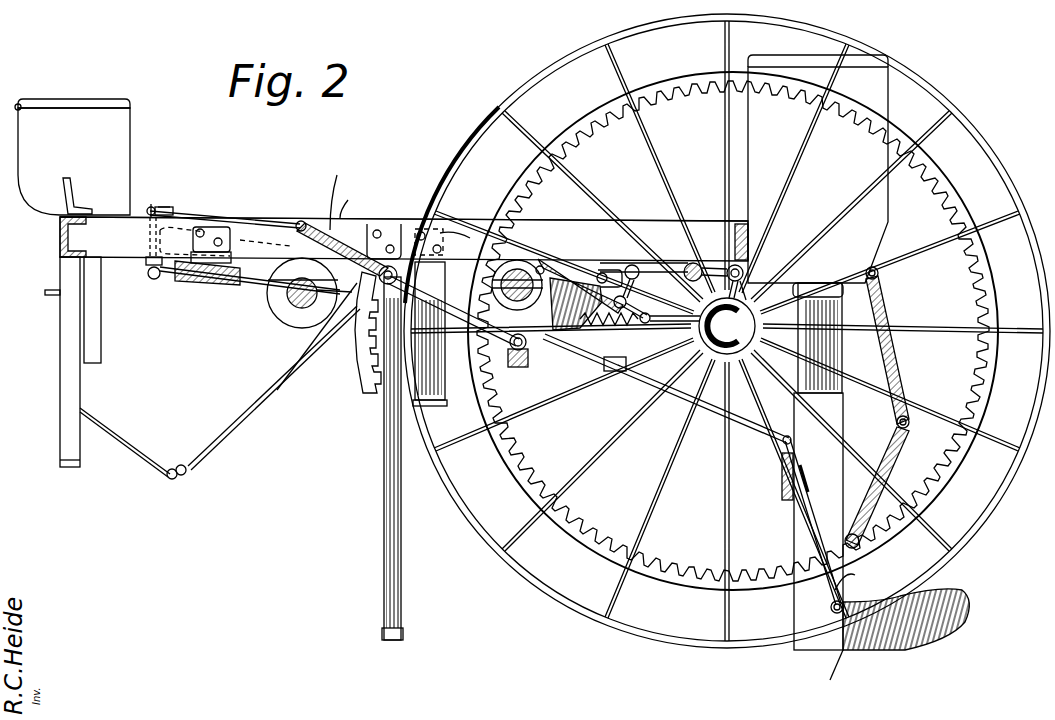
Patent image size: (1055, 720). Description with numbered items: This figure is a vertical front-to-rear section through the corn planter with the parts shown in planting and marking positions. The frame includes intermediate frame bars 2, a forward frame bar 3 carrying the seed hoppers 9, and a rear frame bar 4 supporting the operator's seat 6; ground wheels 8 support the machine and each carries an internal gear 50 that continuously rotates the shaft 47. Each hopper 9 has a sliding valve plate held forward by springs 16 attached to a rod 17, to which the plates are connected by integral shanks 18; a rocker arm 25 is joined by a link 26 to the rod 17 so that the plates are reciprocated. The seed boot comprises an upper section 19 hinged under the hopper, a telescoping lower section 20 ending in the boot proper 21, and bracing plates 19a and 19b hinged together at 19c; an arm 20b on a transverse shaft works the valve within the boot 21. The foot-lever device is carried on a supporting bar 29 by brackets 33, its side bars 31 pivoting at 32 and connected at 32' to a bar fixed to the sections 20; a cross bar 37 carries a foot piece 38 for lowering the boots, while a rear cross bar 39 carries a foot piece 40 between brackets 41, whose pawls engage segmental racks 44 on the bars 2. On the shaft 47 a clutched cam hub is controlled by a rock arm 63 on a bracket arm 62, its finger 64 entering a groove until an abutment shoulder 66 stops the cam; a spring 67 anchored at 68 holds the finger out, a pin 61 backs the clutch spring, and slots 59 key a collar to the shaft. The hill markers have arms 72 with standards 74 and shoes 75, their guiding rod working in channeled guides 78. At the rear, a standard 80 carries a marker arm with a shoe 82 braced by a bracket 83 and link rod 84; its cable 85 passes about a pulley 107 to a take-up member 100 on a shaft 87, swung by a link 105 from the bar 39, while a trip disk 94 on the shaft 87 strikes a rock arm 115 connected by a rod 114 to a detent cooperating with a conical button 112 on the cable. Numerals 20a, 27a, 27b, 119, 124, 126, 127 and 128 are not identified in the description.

The intermediate frame bars 2 is at (350, 228).
The forward frame bar 3 is at (750, 248).
The rear frame bar 4 is at (60, 238).
The operator's seat 6 is at (72, 182).
The ground wheels 8 is at (1042, 236).
The seed hoppers 9 is at (818, 169).
The springs 16 is at (697, 264).
The rod 17 is at (728, 268).
The integral shanks 18 is at (722, 292).
The seed boot section 19 is at (842, 348).
The brace plate 19a is at (906, 350).
The brace plate 19b is at (896, 454).
The hinge connection 19c is at (910, 424).
The seed boot section 20 is at (850, 420).
The lever pivot 20a is at (826, 500).
The arm 20b is at (853, 665).
The boot proper 21 is at (915, 615).
The rocker arm 25 is at (636, 263).
The link 26 is at (642, 287).
The pivot 27a is at (872, 576).
The pivot 27b is at (865, 274).
The supporting bar 29 is at (485, 385).
The side bars 31 is at (630, 376).
The pivots 32 is at (472, 329).
The pivotal connection 32' is at (812, 521).
The brackets 33 is at (510, 366).
The cross bar 37 is at (625, 355).
The foot piece 38 is at (588, 370).
The cross bar 39 is at (398, 278).
The foot piece 40 is at (447, 242).
The brackets 41 is at (390, 245).
The segmental racks 44 is at (365, 390).
The shaft 47 is at (540, 265).
The internal gear 50 is at (945, 478).
The slots 59 is at (610, 264).
The stop shoulder or pin 61 is at (575, 279).
The bracket arm 62 is at (628, 303).
The rock arm 63 is at (580, 262).
The finger 64 is at (520, 270).
The abutment shoulder 66 is at (506, 262).
The spring 67 is at (647, 323).
The spring connection 68 is at (605, 326).
The arms 72 is at (236, 286).
The standard 74 is at (384, 436).
The marker shoes 75 is at (401, 612).
The channeled guides 78 is at (436, 406).
The rigid standard 80 is at (82, 408).
The marker shoe 82 is at (50, 295).
The bracket 83 is at (270, 392).
The link rod 84 is at (128, 440).
The cables 85 is at (231, 240).
The shaft 87 is at (292, 325).
The trip disk 94 is at (335, 300).
The take up member 100 is at (347, 198).
The link 105 is at (360, 201).
The pulley 107 is at (175, 209).
The conical button 112 is at (168, 206).
The rod 114 is at (255, 223).
The rock arm 115 is at (301, 221).
The hopper 119 is at (130, 150).
The pin 124 is at (151, 207).
The nut 126 is at (225, 290).
The rod 127 is at (200, 278).
The rod 128 is at (312, 350).